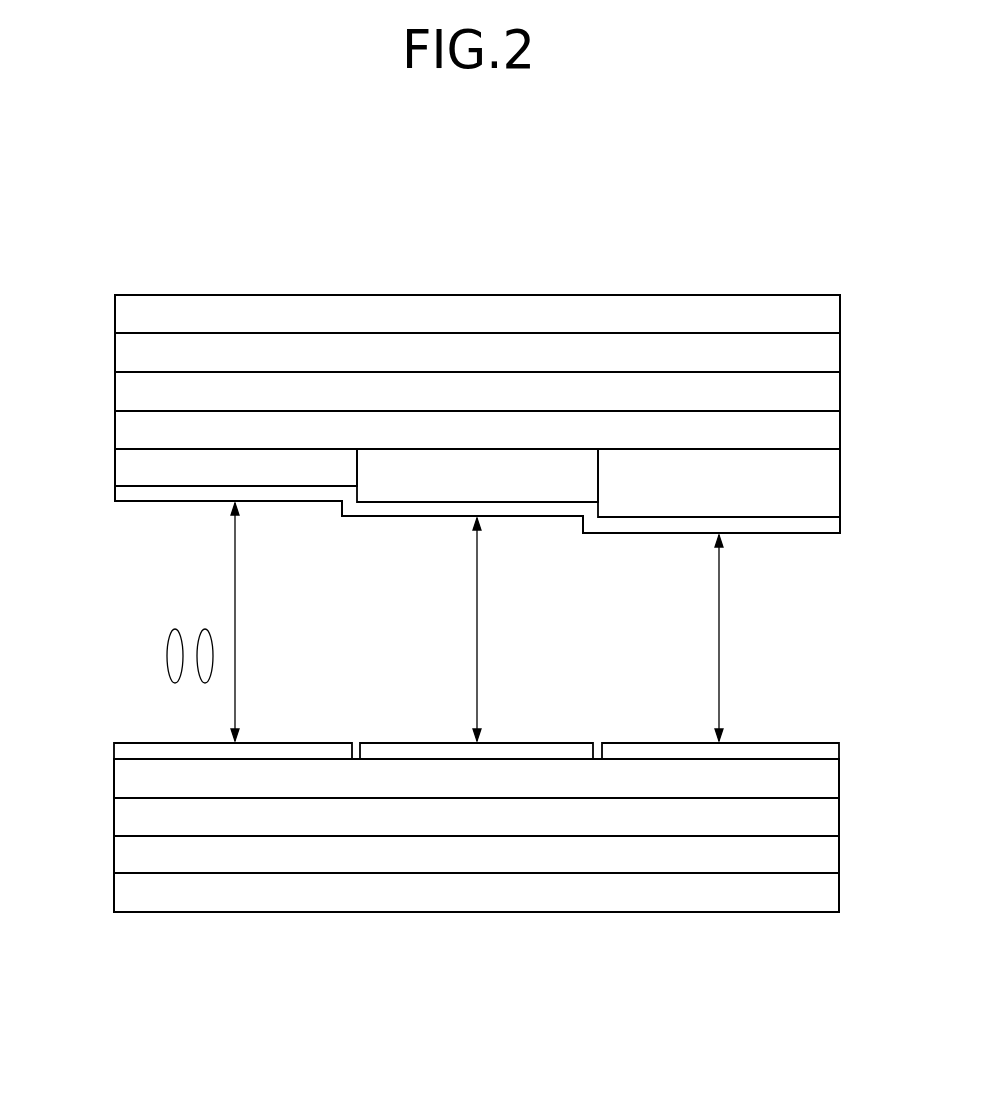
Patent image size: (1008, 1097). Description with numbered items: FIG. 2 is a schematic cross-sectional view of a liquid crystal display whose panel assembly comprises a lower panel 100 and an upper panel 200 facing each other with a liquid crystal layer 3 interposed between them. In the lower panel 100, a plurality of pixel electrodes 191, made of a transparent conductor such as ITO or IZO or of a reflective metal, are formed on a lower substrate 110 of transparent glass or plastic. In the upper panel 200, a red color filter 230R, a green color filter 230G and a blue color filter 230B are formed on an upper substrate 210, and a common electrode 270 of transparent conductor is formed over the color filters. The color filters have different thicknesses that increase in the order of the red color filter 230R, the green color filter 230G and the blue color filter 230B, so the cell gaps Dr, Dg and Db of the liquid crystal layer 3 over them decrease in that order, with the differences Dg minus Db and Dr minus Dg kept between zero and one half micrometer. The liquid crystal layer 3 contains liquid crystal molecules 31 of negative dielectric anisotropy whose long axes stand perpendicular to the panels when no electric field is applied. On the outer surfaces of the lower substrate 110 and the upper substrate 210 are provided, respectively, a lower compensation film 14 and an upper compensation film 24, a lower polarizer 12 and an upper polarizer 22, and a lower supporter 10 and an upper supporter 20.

The upper supporter 20 is at (142, 315).
The upper polarizer 22 is at (142, 354).
The upper compensation film 24 is at (142, 390).
The upper substrate 210 is at (142, 429).
The red color filter 230R is at (180, 466).
The green color filter 230G is at (422, 488).
The blue color filter 230B is at (665, 500).
The common electrode 270 is at (142, 494).
The upper panel 200 is at (852, 413).
The liquid crystal layer 3 is at (852, 745).
The liquid crystal molecules 31 is at (165, 655).
The pixel electrode 191 is at (153, 752).
The lower substrate 110 is at (142, 779).
The lower compensation film 14 is at (142, 815).
The lower polarizer 12 is at (142, 854).
The lower supporter 10 is at (142, 893).
The lower panel 100 is at (852, 748).